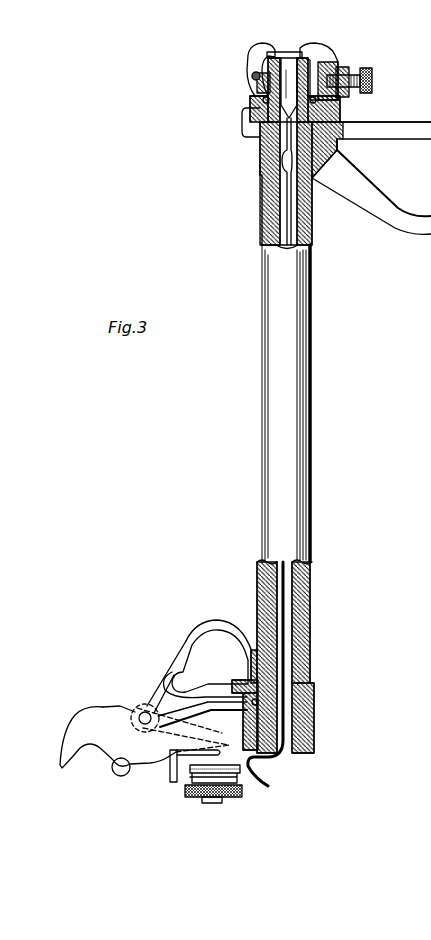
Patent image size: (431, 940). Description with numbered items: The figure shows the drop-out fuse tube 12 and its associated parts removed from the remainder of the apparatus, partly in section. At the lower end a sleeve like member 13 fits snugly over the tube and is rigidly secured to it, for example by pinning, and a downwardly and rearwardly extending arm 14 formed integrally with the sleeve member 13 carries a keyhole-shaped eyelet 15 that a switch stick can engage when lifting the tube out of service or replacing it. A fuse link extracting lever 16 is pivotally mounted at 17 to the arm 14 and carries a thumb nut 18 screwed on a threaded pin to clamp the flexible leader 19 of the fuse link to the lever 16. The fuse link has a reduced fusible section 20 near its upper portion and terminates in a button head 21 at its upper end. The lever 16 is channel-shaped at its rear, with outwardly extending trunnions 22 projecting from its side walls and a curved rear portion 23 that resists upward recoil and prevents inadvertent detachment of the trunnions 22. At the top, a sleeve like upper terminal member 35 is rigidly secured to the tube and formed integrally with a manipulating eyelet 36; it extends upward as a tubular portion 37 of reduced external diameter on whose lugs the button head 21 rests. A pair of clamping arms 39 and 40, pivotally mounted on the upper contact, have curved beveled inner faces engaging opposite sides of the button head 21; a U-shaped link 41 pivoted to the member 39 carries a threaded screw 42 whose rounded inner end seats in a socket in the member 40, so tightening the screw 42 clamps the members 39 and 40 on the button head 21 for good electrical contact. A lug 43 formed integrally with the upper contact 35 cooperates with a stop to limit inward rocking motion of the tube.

The drop-out fuse tube 12 is at (314, 445).
The sleeve like member 13 is at (316, 720).
The arm 14 is at (163, 670).
The keyhole-shaped eyelet 15 is at (204, 648).
The fuse link extracting lever 16 is at (150, 757).
The pivot 17 is at (142, 712).
The thumb nut 18 is at (240, 800).
The flexible leader 19 is at (300, 628).
The reduced fusible section 20 is at (276, 142).
The button head 21 is at (289, 55).
The trunnions 22 is at (118, 772).
The curved rear portion 23 is at (100, 708).
The upper terminal member 35 is at (259, 160).
The manipulating eyelet 36 is at (372, 218).
The tubular portion 37 is at (330, 66).
The clamping arm 39 is at (258, 48).
The clamping arm 40 is at (322, 47).
The U-shaped link 41 is at (347, 70).
The screw 42 is at (373, 80).
The lug 43 is at (242, 120).